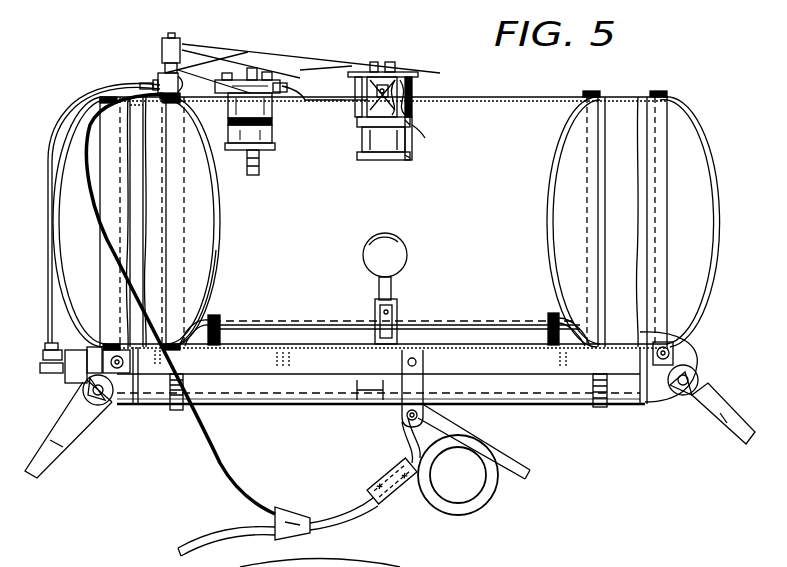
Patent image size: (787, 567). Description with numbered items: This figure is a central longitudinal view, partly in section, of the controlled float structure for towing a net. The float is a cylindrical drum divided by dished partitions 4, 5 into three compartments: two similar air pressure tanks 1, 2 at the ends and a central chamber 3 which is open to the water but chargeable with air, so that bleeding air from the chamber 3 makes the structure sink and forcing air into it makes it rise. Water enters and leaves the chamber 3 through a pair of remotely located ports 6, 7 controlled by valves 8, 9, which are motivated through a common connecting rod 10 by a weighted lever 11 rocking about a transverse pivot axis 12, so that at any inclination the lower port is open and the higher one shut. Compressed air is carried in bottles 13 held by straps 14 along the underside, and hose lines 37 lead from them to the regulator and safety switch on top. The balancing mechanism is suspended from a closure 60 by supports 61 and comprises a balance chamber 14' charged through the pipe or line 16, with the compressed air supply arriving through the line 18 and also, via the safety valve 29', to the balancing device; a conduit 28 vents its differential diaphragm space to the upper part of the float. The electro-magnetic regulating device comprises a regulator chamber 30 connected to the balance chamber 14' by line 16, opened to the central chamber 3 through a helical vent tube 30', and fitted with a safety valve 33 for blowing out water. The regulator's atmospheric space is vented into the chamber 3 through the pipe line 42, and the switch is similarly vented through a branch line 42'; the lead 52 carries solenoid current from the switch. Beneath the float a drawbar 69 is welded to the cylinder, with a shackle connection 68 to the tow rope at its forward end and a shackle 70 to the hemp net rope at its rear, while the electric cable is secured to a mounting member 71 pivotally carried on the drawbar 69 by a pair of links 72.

The air pressure tank 1 is at (573, 242).
The air pressure tank 2 is at (197, 217).
The chamber 3 is at (508, 109).
The dished partition 4 is at (547, 223).
The dished partition 5 is at (219, 258).
The port 6 is at (210, 344).
The port 7 is at (572, 340).
The valve 8 is at (224, 318).
The valve 9 is at (548, 318).
The connecting rod 10 is at (440, 332).
The weighted lever 11 is at (392, 289).
The transverse pivot axis 12 is at (378, 308).
The bottle 13 is at (508, 395).
The strap 14 is at (374, 409).
The balance chamber 14' is at (367, 138).
The pipe or line 16 is at (345, 68).
The pipe or line 18 is at (195, 52).
The conduit or pipe line 28 is at (412, 84).
The safety valve 29' is at (343, 105).
The regulator chamber 30 is at (251, 121).
The vent tube and conduit 30' is at (293, 140).
The safety valve 33 is at (260, 164).
The hose line 37 is at (80, 104).
The pipe line 42 is at (309, 61).
The branch line 42' is at (241, 52).
The lead 52 is at (184, 101).
The closure 60 is at (415, 72).
The support 61 is at (412, 107).
The shackle connection 68 is at (690, 378).
The drawbar 69 is at (326, 398).
The shackle 70 is at (83, 393).
The mounting member 71 is at (392, 464).
The link 72 is at (400, 383).